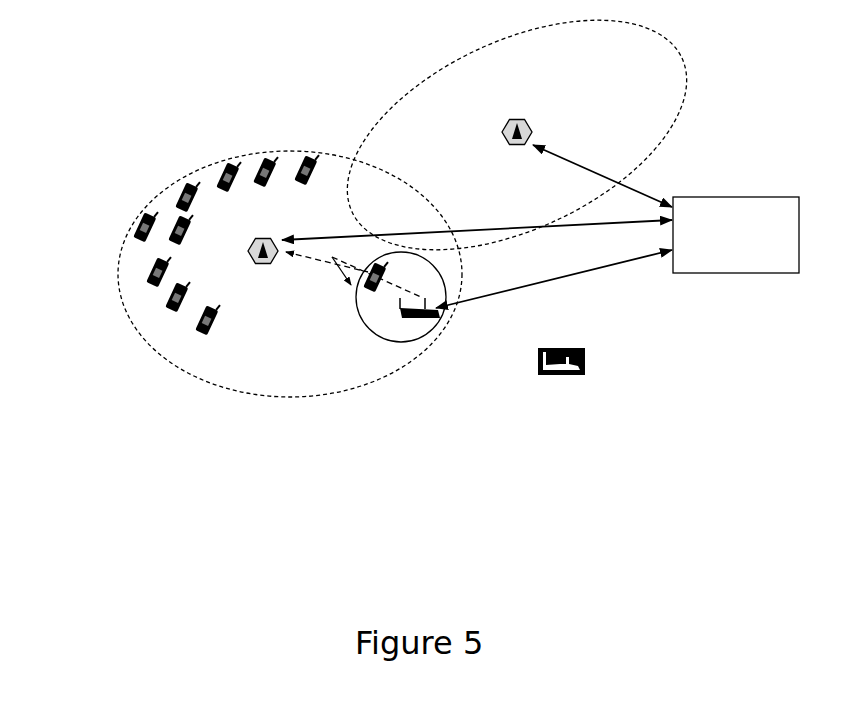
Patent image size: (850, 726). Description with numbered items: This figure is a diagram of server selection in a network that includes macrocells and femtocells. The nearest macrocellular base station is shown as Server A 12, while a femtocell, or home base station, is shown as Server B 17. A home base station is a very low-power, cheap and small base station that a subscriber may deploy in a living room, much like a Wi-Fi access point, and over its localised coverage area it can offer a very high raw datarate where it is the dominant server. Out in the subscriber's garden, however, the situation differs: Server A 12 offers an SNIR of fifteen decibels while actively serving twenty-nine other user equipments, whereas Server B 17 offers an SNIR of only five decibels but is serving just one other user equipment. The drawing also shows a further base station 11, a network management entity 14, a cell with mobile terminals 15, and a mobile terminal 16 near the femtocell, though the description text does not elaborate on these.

The base station C 11 is at (530, 121).
The Server A 12 is at (270, 240).
The network management entity 14 is at (752, 202).
The cell with mobile terminals 15 is at (147, 298).
The mobile terminal 16 is at (357, 295).
The Server B 17 is at (418, 325).